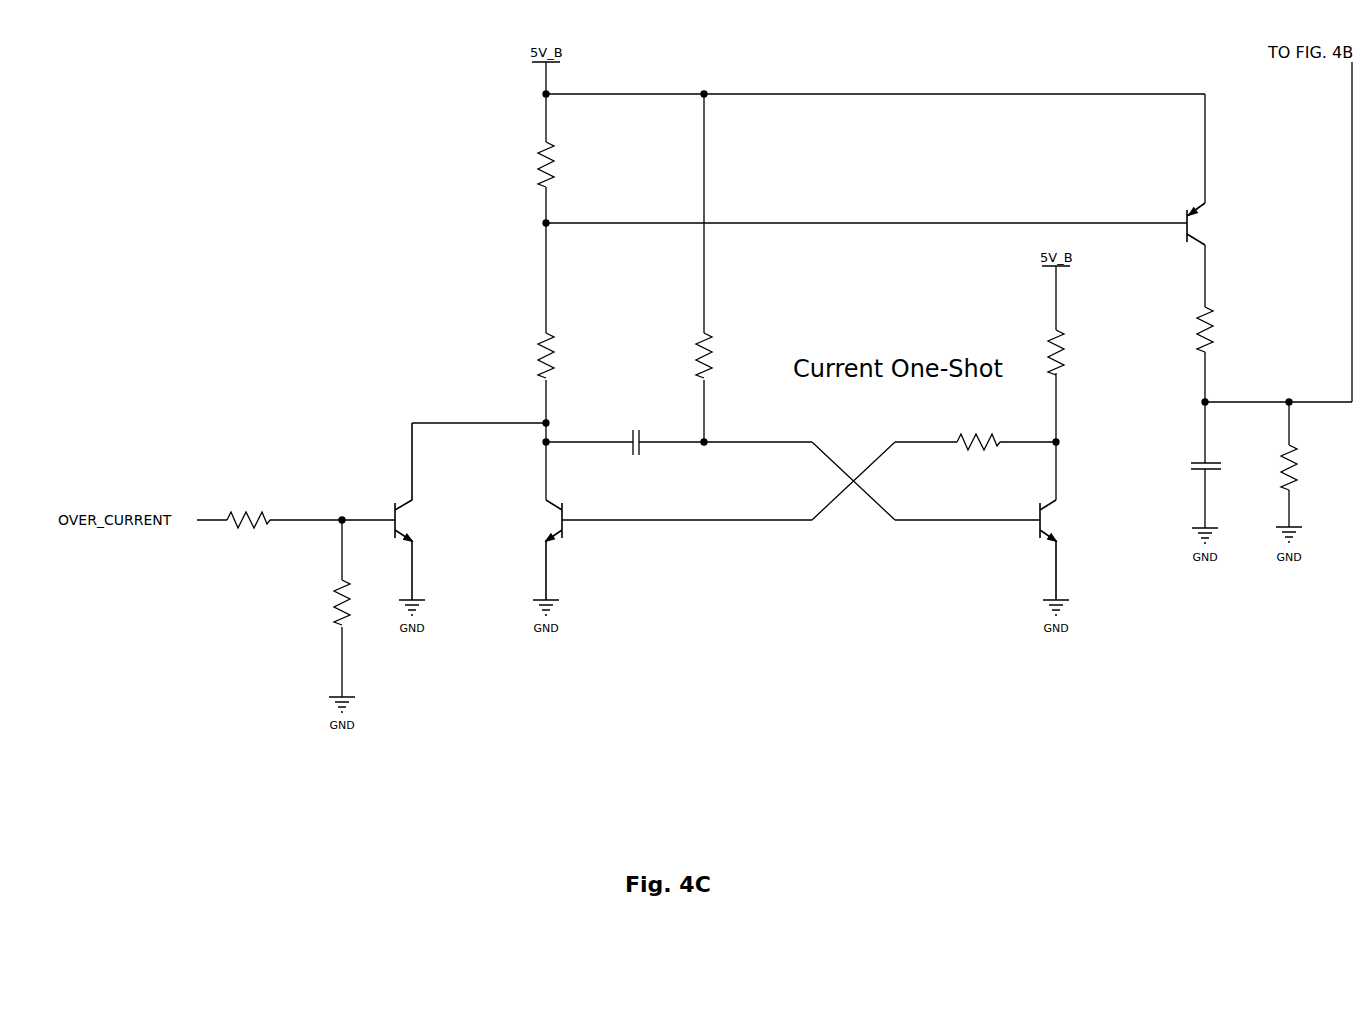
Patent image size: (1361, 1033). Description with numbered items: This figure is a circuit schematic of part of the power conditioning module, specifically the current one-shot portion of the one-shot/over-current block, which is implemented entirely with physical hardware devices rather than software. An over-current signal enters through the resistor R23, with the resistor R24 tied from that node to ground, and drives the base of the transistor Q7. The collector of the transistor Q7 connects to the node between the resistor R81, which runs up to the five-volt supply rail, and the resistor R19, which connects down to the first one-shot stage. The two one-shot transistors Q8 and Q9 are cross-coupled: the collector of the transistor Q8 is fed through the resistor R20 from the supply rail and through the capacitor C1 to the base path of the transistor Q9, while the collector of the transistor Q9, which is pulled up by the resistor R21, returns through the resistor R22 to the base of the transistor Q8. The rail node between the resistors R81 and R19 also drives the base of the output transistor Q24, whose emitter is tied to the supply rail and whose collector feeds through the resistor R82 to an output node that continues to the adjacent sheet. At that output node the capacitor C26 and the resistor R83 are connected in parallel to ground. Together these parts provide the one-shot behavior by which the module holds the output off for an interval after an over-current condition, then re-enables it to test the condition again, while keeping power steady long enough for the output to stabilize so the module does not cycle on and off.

The input resistor R23 is at (247, 525).
The pull-down resistor R24 is at (363, 602).
The input transistor Q7 is at (385, 511).
The pull-up resistor R81 is at (566, 164).
The collector resistor R19 is at (566, 355).
The collector resistor R20 is at (724, 355).
The timing capacitor C1 is at (648, 449).
The one-shot transistor Q8 is at (575, 543).
The cross-coupling resistor R22 is at (976, 450).
The collector resistor R21 is at (1076, 352).
The one-shot transistor Q9 is at (1066, 550).
The output transistor Q24 is at (1214, 224).
The output resistor R82 is at (1222, 329).
The filter capacitor C26 is at (1232, 479).
The bleed resistor R83 is at (1310, 469).